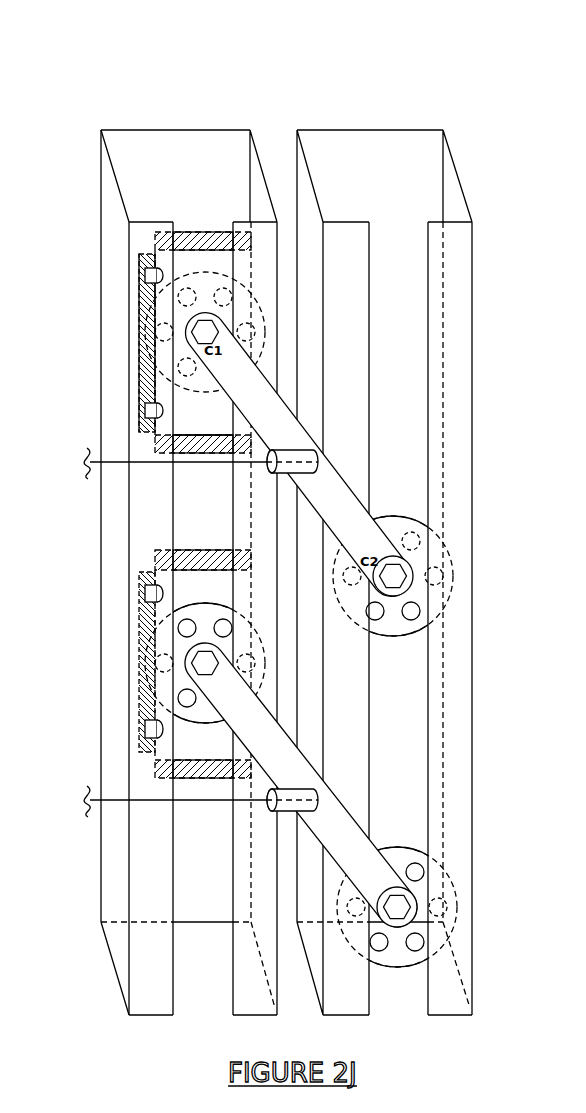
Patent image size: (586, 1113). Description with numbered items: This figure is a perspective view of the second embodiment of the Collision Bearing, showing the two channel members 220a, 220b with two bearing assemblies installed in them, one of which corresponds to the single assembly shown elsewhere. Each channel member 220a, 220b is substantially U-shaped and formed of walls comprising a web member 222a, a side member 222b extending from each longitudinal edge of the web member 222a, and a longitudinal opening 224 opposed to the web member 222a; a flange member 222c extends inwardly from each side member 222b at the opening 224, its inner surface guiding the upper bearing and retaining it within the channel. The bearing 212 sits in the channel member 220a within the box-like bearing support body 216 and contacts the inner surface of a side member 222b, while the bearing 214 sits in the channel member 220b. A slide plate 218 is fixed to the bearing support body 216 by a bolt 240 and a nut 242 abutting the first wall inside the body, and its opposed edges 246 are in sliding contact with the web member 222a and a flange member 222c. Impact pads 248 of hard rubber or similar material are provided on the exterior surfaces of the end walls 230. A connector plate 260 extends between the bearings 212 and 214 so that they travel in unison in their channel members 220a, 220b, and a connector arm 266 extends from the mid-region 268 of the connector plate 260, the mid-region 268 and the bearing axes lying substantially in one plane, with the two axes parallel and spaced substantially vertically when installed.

The channel member 220a is at (178, 508).
The channel member 220b is at (393, 62).
The web member 222a is at (138, 155).
The side member 222b is at (110, 260).
The flange member 222c is at (148, 209).
The longitudinal opening 224 is at (195, 210).
The bearing 212 is at (218, 272).
The bearing 214 is at (414, 506).
The impact pad 248 is at (220, 238).
The end wall 230 is at (178, 240).
The bearing support body 216 is at (186, 425).
The slide plate 218 is at (139, 318).
The bolt 240 is at (139, 408).
The opposed edge 246 is at (152, 363).
The nut 242 is at (157, 402).
The connector plate 260 is at (280, 429).
The mid-region 268 is at (295, 466).
The connector arm 266 is at (295, 467).